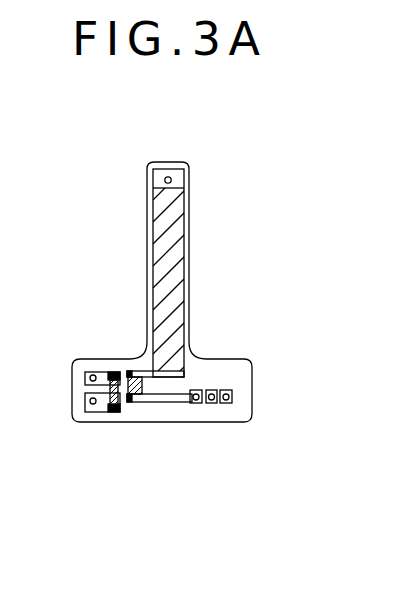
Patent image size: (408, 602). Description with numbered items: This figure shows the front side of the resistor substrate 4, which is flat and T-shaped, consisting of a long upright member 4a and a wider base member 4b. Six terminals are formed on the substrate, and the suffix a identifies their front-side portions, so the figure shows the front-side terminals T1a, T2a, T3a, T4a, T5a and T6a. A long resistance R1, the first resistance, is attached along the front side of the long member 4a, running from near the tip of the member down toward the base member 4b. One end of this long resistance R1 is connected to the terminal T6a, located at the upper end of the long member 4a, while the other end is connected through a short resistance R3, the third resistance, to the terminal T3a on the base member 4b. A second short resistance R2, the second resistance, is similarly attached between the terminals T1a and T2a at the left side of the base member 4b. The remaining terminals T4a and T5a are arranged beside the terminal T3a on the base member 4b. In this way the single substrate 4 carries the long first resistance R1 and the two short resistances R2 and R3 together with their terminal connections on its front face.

The resistor substrate 4 is at (179, 311).
The long member 4a is at (189, 268).
The base portion 4b is at (247, 372).
The long resistance R1 is at (178, 218).
The short resistance R2 is at (113, 405).
The short resistance R3 is at (148, 398).
The terminal T1a is at (92, 373).
The terminal T2a is at (90, 405).
The terminal T3a is at (197, 404).
The terminal T4a is at (211, 403).
The terminal T5a is at (232, 398).
The terminal T6a is at (168, 177).